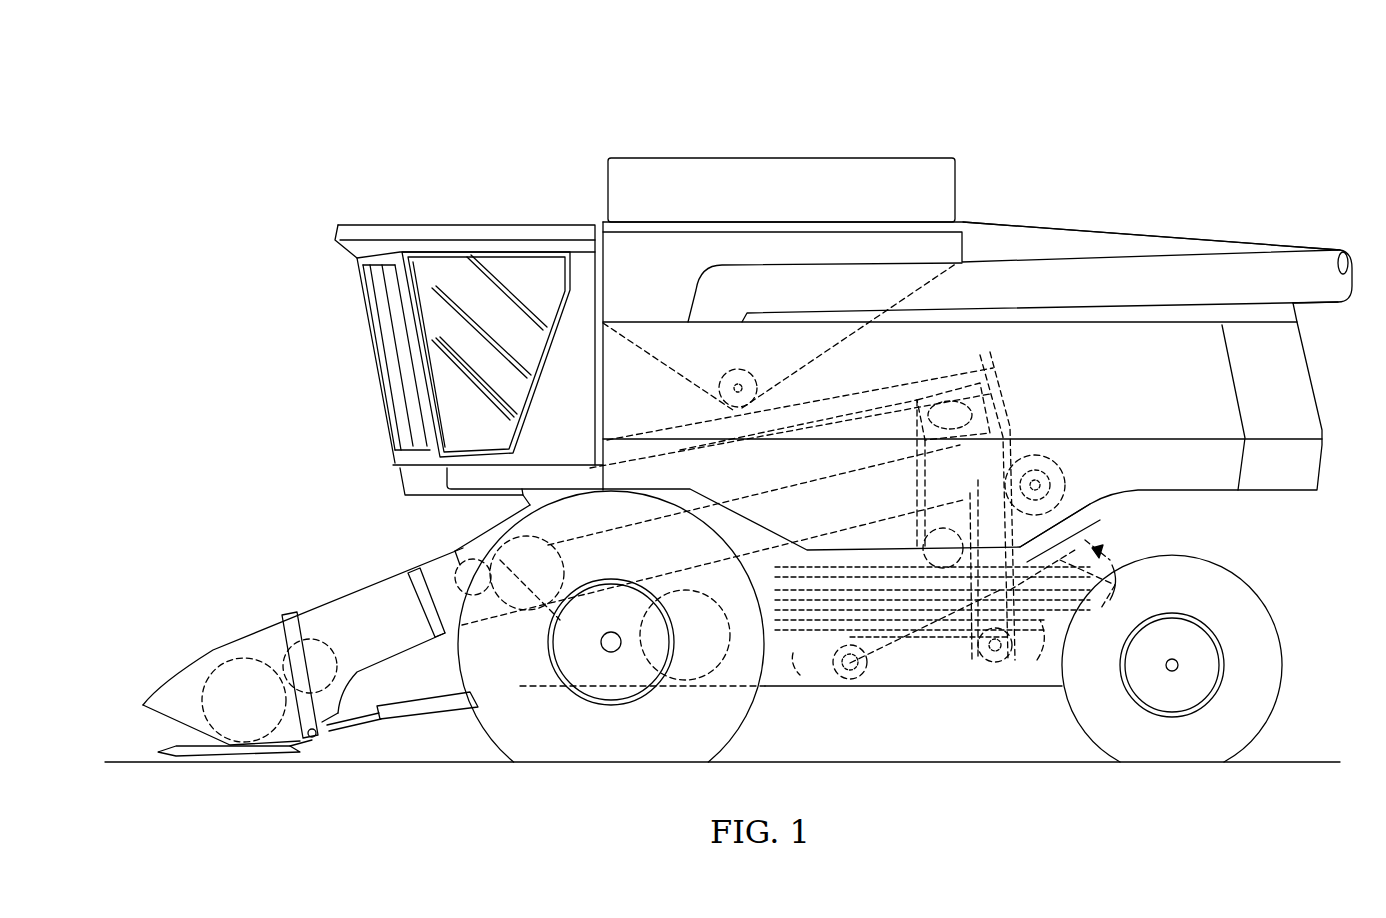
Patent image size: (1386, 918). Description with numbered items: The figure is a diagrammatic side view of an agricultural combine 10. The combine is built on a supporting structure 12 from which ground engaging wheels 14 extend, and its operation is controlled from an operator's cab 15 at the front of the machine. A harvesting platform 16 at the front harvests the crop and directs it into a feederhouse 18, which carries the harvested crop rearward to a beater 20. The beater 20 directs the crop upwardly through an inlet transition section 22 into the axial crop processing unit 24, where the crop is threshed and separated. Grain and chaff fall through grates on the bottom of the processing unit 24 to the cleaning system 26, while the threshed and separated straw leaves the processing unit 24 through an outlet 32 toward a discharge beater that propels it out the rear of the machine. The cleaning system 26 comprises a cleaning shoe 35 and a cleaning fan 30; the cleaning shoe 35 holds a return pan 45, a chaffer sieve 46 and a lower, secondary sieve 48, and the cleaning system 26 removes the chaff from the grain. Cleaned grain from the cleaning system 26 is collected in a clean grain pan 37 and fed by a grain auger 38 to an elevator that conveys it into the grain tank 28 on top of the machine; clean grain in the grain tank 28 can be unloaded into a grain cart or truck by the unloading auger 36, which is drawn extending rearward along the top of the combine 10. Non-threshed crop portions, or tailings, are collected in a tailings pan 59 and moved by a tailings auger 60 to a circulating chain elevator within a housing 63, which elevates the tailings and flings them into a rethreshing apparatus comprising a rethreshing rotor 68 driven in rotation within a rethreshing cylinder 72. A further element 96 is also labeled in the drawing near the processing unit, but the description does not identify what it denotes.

The agricultural combine 10 is at (1095, 145).
The supporting structure 12 is at (820, 688).
The ground engaging wheels 14 is at (731, 737).
The operator's cab 15 is at (380, 358).
The harvesting platform 16 is at (248, 642).
The feederhouse 18 is at (367, 590).
The beater 20 is at (500, 540).
The inlet transition section 22 is at (611, 642).
The axial crop processing unit 24 is at (847, 387).
The cleaning system 26 is at (1112, 548).
The grain tank 28 is at (757, 202).
The cleaning fan 30 is at (704, 690).
The outlet 32 is at (1062, 470).
The cleaning shoe 35 is at (1128, 582).
The unloading auger 36 is at (1325, 248).
The clean grain pan 37 is at (793, 680).
The grain auger 38 is at (883, 682).
The return pan 45 is at (1095, 538).
The chaffer sieve 46 is at (827, 578).
The secondary sieve 48 is at (870, 627).
The tailings pan 59 is at (1037, 665).
The tailings auger 60 is at (990, 665).
The housing 63 is at (1100, 498).
The rethreshing rotor 68 is at (988, 386).
The rethreshing cylinder 72 is at (932, 385).
The drive pulley 96 is at (922, 535).